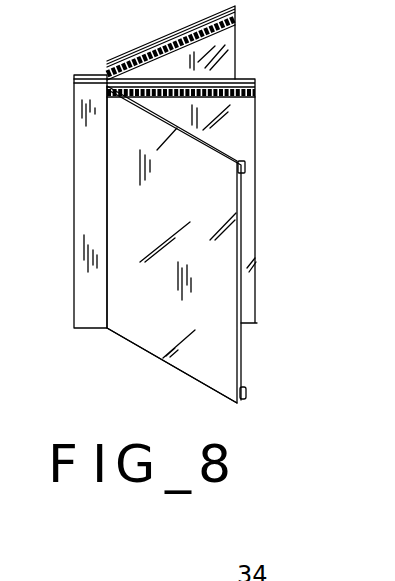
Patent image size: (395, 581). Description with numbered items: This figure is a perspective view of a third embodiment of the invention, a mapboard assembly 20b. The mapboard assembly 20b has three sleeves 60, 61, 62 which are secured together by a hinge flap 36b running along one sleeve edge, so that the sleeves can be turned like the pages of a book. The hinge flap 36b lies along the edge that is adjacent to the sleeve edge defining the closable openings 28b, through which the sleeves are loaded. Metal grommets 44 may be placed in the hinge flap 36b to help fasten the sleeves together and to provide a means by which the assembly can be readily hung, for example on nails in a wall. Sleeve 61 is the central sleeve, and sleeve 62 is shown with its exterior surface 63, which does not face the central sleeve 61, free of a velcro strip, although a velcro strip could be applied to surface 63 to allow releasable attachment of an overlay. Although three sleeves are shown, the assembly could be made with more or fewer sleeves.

The mapboard assembly 20b is at (108, 55).
The closable openings 28b is at (206, 26).
The hinge flap 36b is at (83, 318).
The metal grommets 44 is at (219, 164).
The sleeve 60 is at (226, 54).
The central sleeve 61 is at (256, 131).
The sleeve 62 is at (225, 270).
The exterior surface 63 is at (223, 376).